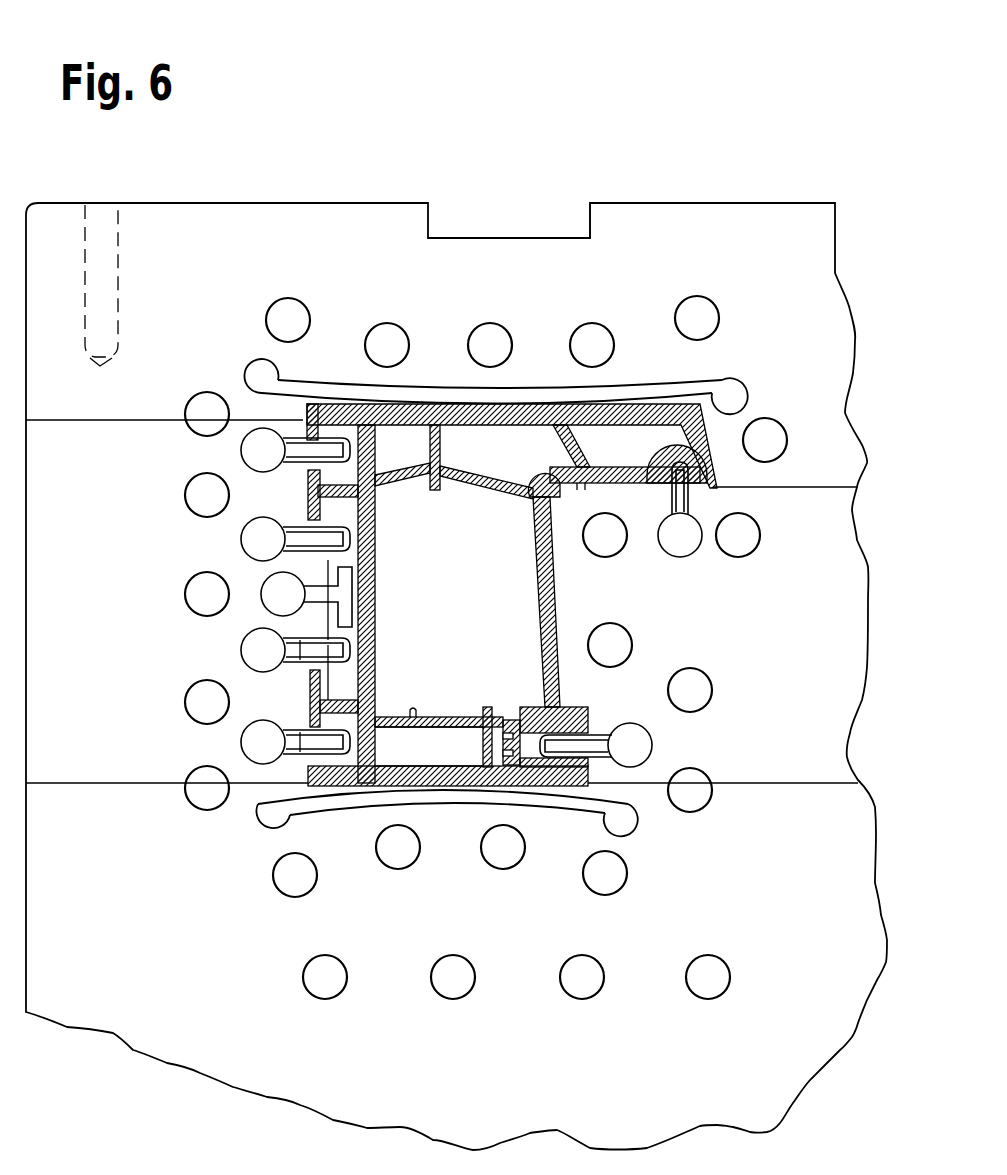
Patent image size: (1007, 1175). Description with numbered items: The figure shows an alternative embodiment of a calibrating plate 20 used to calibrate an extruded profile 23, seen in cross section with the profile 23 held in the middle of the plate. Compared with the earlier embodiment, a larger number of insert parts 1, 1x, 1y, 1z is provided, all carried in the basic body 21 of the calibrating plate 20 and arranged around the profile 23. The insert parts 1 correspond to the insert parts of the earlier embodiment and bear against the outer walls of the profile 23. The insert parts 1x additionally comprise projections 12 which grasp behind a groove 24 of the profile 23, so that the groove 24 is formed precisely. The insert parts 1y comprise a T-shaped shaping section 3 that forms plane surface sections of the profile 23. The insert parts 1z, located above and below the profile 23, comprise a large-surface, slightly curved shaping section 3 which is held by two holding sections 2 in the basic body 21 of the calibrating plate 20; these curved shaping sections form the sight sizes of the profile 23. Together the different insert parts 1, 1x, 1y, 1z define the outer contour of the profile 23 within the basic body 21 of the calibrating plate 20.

The calibrating plate 20 is at (752, 178).
The basic body 21 is at (645, 232).
The profile 23 is at (357, 414).
The shaping section 3 is at (443, 398).
The holding sections 2 is at (262, 372).
The insert parts 1 is at (240, 450).
The insert parts 1x is at (240, 743).
The insert parts 1y is at (260, 594).
The insert parts 1z is at (536, 383).
The projections 12 is at (335, 675).
The groove 24 is at (340, 692).